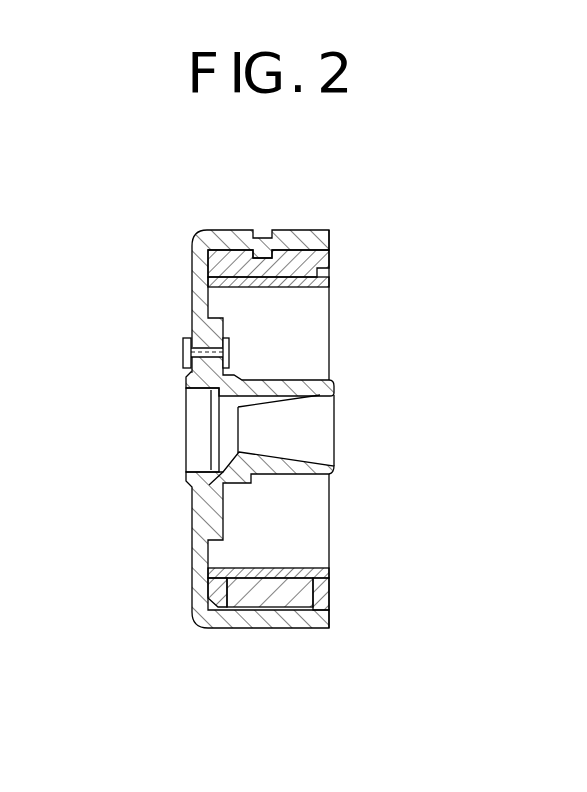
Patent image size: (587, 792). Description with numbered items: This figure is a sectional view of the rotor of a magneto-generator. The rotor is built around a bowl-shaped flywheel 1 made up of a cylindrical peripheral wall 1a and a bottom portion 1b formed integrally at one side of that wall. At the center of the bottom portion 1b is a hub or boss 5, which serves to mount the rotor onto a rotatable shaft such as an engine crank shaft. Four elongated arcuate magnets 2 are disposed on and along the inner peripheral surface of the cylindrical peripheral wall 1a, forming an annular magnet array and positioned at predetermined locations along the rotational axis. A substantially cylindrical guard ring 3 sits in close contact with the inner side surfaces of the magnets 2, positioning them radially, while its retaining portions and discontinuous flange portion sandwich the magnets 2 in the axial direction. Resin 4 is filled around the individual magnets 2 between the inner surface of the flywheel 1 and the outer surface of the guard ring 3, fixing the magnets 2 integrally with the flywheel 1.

The flywheel 1 is at (205, 390).
The cylindrical peripheral wall 1a is at (230, 230).
The bottom portion 1b is at (217, 540).
The magnet 2 is at (272, 602).
The guard ring 3 is at (270, 568).
The resin 4 is at (303, 250).
The hub or boss 5 is at (276, 470).